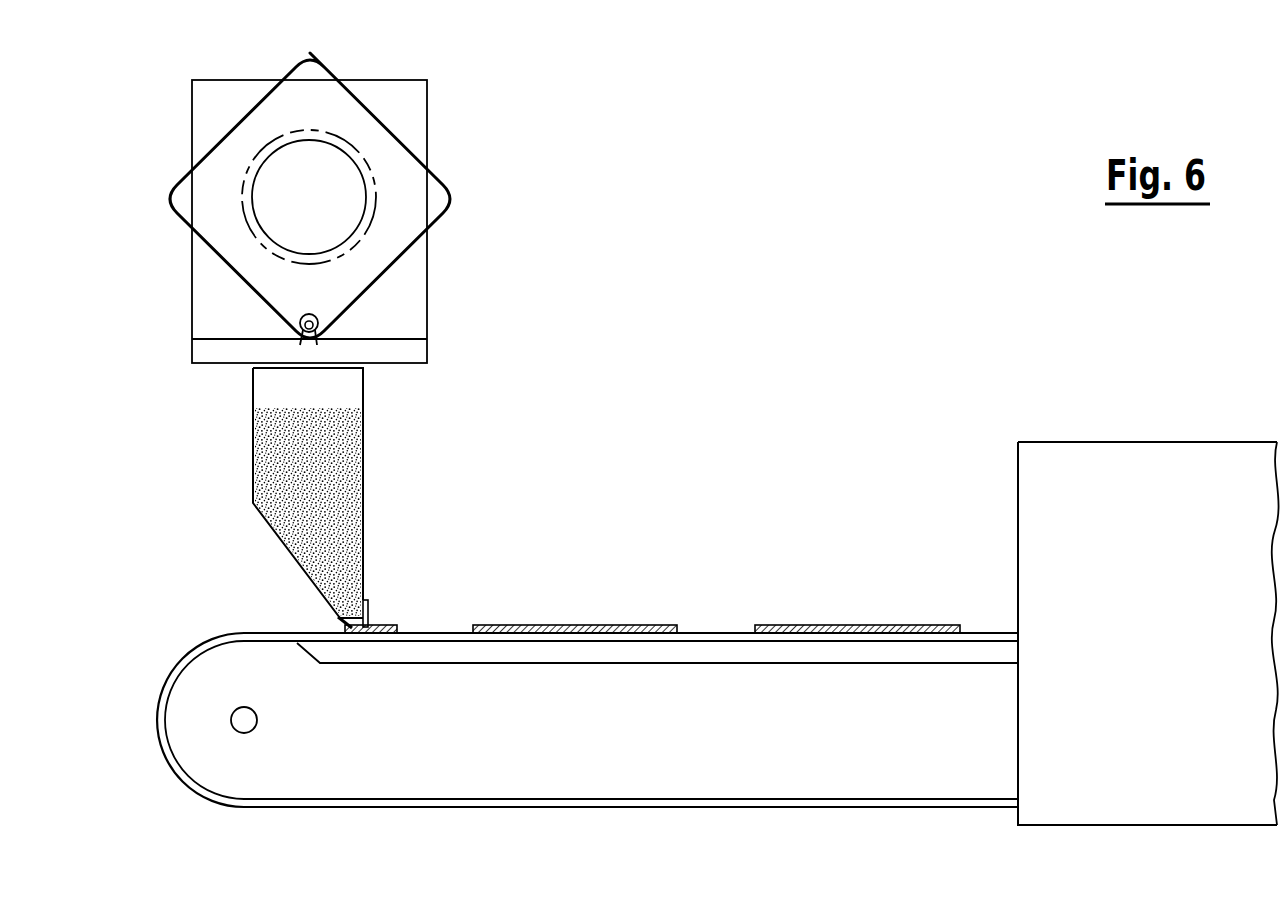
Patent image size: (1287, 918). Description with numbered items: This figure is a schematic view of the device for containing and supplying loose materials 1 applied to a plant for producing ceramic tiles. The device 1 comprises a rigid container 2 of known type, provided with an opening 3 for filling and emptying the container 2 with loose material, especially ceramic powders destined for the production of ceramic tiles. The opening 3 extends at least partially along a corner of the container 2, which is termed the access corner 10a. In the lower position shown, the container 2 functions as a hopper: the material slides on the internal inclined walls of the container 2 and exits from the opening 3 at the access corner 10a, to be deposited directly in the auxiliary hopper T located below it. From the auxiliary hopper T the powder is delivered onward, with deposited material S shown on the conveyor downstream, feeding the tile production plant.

The device for containing and supplying loose materials 1 is at (497, 97).
The container 2 is at (201, 106).
The opening 3 is at (315, 332).
The access corner 10a is at (298, 343).
The auxiliary hopper T is at (297, 477).
The deposited strip of material S is at (390, 627).